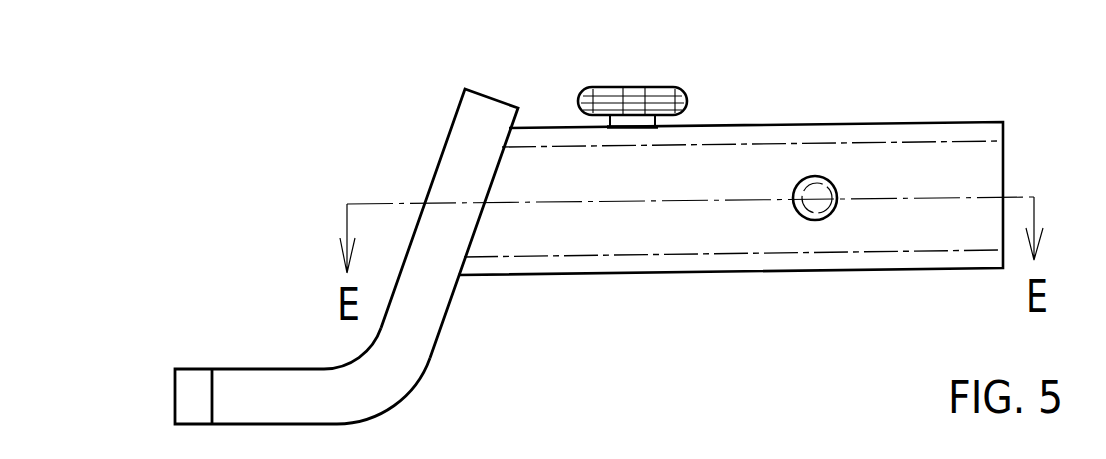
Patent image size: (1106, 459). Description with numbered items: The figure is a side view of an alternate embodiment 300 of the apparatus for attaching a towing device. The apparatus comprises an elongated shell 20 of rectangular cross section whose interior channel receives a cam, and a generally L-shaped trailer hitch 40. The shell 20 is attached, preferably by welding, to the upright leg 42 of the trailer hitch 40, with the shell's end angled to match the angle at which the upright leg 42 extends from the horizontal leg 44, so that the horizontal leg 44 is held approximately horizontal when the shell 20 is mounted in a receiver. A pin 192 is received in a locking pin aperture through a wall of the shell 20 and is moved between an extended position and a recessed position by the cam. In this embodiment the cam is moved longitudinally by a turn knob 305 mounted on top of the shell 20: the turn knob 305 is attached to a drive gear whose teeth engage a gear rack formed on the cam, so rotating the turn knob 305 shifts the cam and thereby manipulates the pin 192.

The alternate embodiment 300 is at (326, 94).
The shell 20 is at (930, 116).
The pin 192 is at (823, 212).
The turn knob 305 is at (660, 85).
The trailer hitch 40 is at (448, 395).
The upright leg 42 is at (433, 303).
The horizontal leg 44 is at (268, 395).